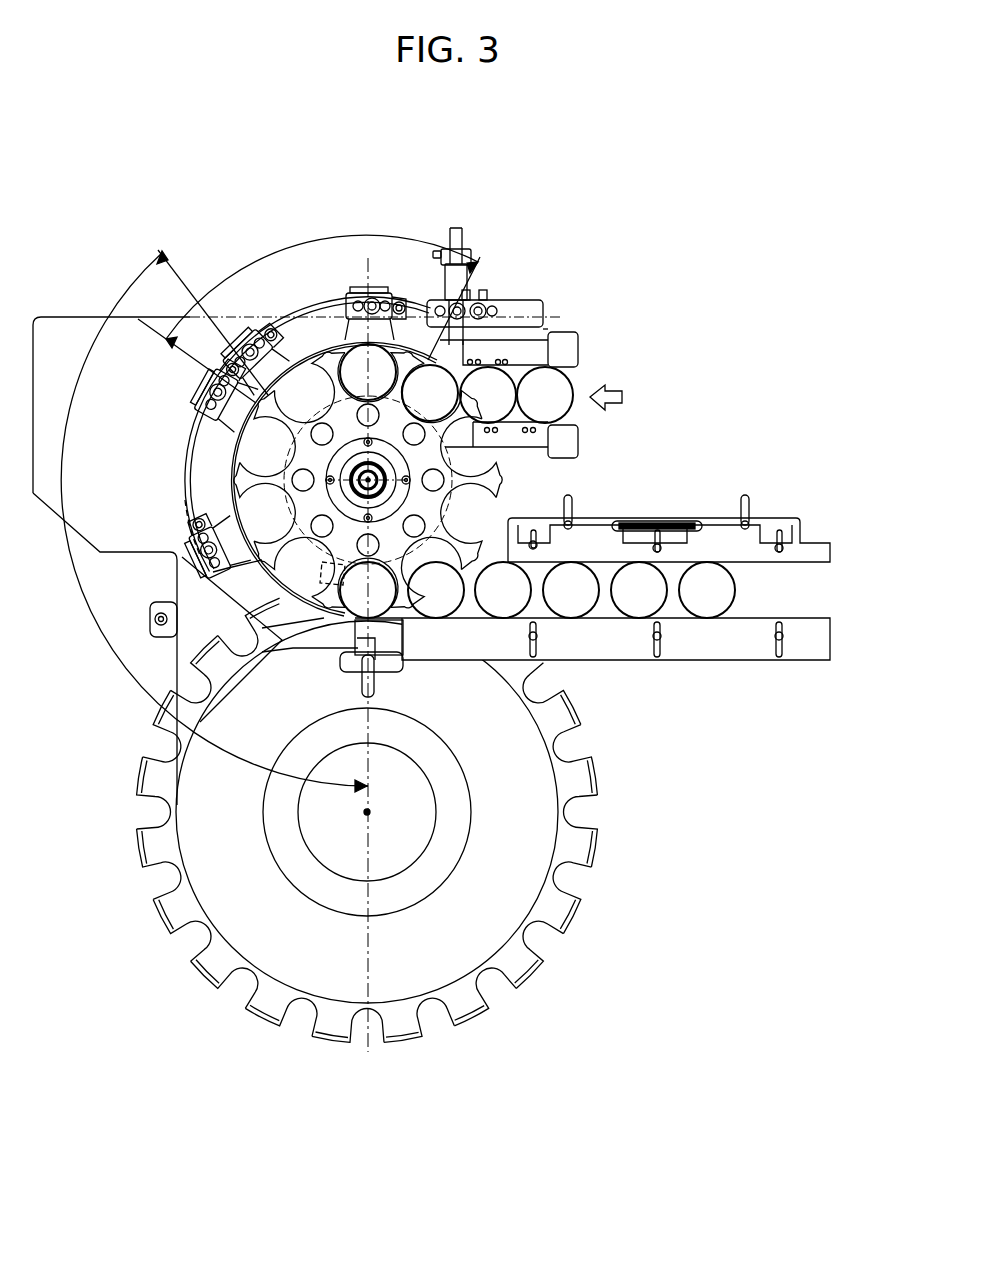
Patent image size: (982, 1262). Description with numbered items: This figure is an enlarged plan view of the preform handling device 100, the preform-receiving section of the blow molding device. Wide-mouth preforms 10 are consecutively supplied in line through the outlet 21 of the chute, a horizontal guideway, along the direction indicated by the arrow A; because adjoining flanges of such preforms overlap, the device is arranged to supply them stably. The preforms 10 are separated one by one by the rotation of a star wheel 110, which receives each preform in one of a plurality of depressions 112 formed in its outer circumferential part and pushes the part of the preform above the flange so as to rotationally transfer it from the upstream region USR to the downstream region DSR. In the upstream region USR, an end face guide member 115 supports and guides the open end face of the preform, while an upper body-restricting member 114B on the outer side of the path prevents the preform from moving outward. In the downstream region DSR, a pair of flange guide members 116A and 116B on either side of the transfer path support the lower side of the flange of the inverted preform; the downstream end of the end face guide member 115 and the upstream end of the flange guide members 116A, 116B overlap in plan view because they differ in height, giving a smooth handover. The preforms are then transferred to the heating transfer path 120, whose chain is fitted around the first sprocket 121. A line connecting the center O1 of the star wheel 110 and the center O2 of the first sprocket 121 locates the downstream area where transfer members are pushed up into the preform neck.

The preform handling device 100 is at (701, 291).
The wide-mouth preform 10 is at (577, 379).
The outlet 21 is at (510, 345).
The star wheel 110 is at (478, 490).
The depressions 112 is at (466, 470).
The upper body-restricting member 114B is at (293, 343).
The end face guide member 115 is at (318, 385).
The flange guide member 116A is at (195, 492).
The flange guide member 116B is at (328, 620).
The heating transfer path 120 is at (789, 585).
The first sprocket 121 is at (334, 1030).
The center of the star wheel O1 is at (309, 413).
The center of the first sprocket O2 is at (372, 814).
The upstream region USR is at (309, 312).
The downstream region DSR is at (209, 521).
The direction of supply A is at (618, 400).